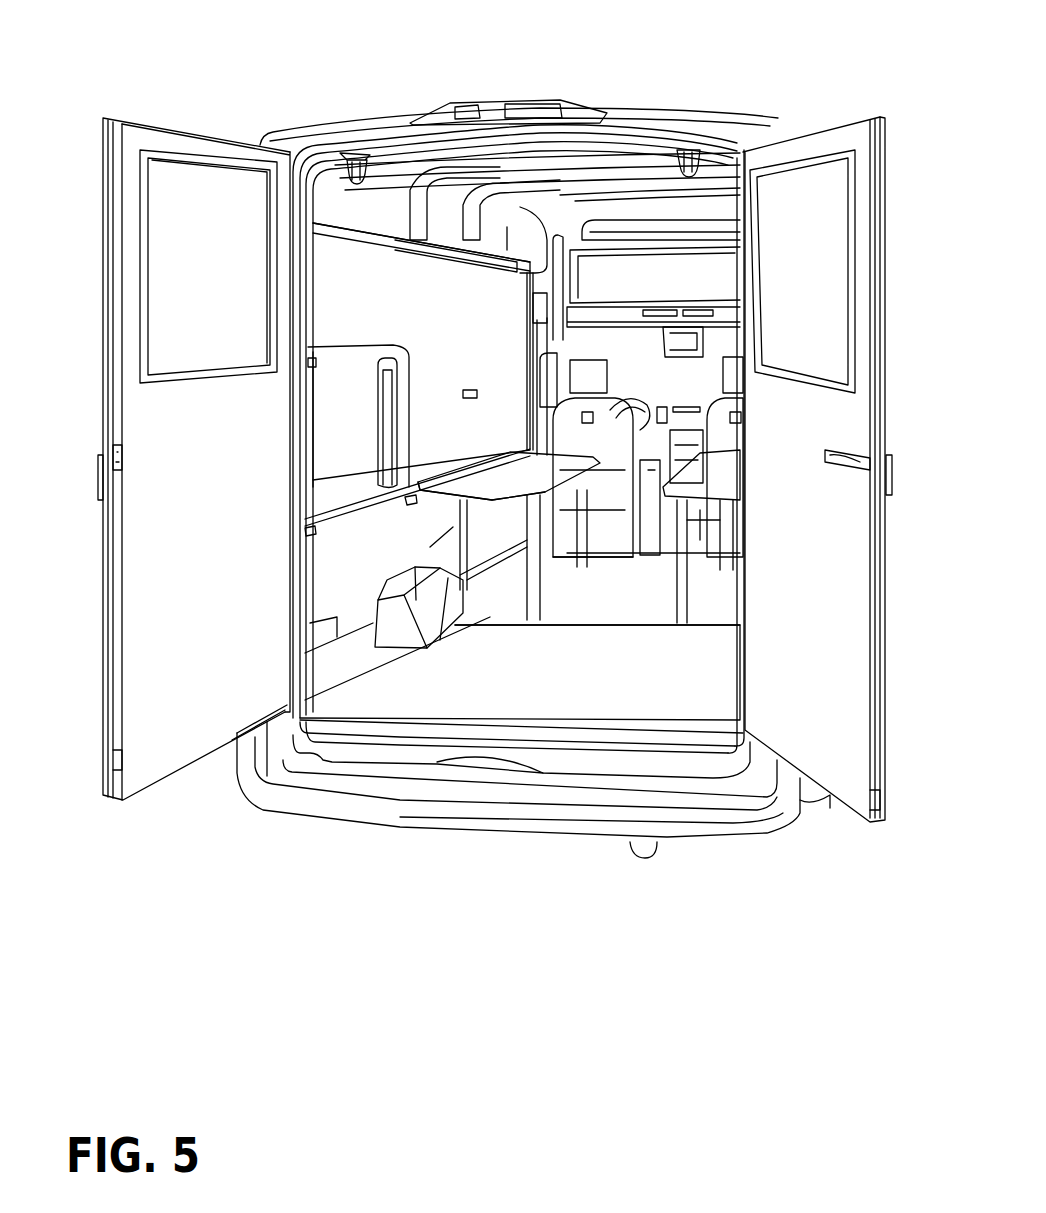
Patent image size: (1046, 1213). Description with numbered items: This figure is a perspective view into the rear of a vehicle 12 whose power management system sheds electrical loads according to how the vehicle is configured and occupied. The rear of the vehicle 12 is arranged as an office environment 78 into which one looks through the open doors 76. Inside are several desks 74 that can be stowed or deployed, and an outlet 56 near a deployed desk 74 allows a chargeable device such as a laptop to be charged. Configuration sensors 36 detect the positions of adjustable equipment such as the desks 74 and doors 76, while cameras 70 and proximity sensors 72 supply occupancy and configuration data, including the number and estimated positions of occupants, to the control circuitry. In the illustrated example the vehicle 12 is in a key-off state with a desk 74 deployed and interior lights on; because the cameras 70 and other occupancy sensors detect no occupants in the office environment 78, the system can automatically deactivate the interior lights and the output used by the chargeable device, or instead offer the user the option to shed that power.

The vehicle 12 is at (427, 110).
The configuration sensors 36 is at (470, 390).
The outlets 56 is at (413, 503).
The cameras 70 is at (352, 152).
The proximity sensors 72 is at (588, 415).
The desks 74 is at (524, 484).
The doors 76 is at (107, 570).
The office environment 78 is at (600, 612).